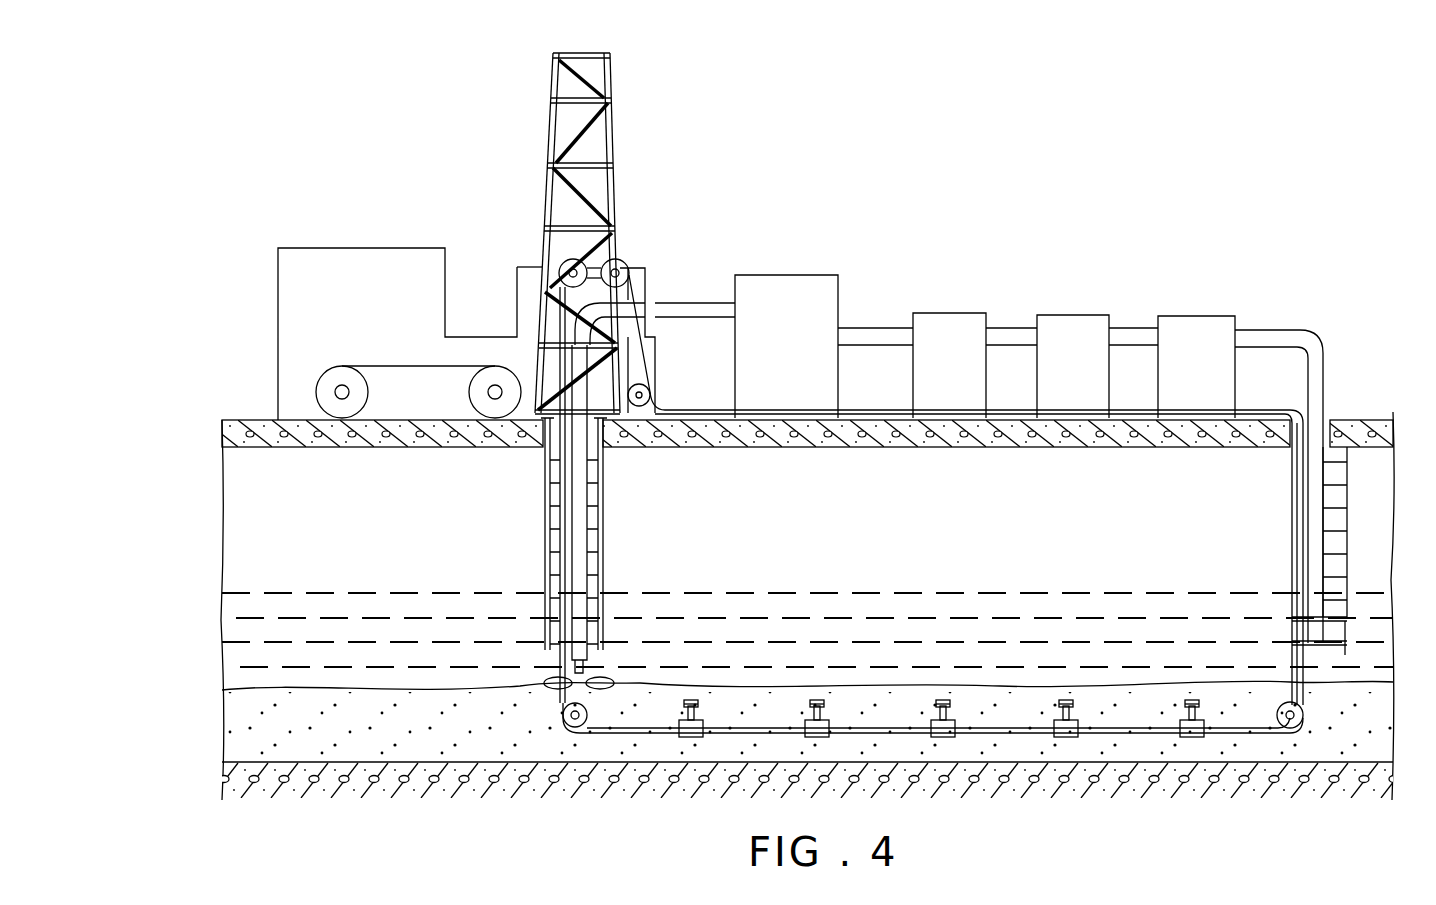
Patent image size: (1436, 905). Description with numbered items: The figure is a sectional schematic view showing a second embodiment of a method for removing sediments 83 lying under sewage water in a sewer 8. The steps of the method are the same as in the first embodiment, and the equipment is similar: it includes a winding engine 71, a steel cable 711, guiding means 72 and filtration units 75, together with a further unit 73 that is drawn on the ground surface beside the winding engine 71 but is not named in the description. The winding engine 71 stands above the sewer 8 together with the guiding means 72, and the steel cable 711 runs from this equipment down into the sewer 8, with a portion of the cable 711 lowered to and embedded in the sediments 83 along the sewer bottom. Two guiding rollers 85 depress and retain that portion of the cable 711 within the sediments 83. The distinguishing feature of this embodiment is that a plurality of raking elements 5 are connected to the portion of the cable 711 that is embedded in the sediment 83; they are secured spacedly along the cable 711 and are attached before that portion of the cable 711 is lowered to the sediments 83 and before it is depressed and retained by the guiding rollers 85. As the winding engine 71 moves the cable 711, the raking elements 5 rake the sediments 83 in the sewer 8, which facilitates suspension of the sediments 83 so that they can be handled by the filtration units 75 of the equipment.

The sewer 8 is at (255, 465).
The winding engine 71 is at (622, 150).
The guiding means 72 is at (483, 343).
The processing unit 73 is at (812, 283).
The filtration units 75 is at (974, 320).
The steel cable 711 is at (1221, 735).
The guiding rollers 85 is at (574, 735).
The sediments 83 is at (1095, 755).
The raking elements 5 is at (950, 738).